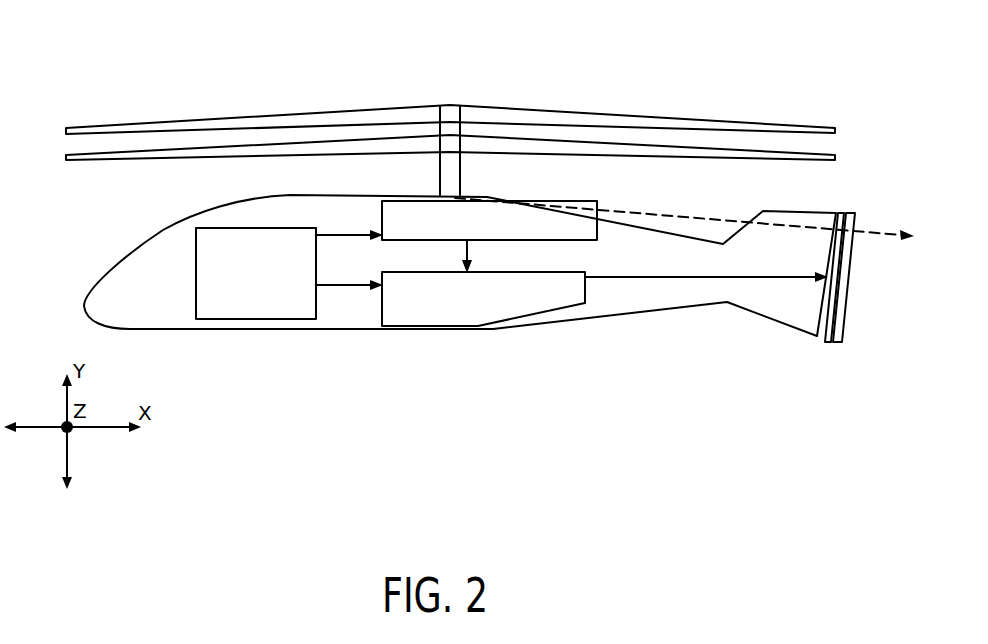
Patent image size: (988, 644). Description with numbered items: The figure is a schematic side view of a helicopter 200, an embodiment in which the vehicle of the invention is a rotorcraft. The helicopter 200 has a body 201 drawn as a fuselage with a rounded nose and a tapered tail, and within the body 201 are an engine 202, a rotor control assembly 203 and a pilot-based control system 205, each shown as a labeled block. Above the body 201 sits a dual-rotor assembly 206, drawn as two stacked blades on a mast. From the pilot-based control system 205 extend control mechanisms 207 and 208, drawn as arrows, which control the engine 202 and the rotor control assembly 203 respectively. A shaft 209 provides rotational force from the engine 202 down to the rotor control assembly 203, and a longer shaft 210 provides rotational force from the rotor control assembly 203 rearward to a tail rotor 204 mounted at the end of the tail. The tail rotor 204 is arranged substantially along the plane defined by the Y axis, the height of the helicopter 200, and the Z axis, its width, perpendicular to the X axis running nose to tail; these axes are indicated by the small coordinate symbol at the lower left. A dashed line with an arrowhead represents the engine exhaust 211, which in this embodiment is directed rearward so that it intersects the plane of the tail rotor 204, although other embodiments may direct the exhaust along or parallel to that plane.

The helicopter 200 is at (588, 415).
The body 201 is at (370, 319).
The engine 202 is at (493, 226).
The rotor control assembly 203 is at (515, 308).
The tail rotor 204 is at (830, 326).
The pilot-based control system 205 is at (263, 320).
The dual-rotor assembly 206 is at (524, 92).
The control mechanism 207 is at (348, 233).
The control mechanism 208 is at (323, 286).
The shaft 209 is at (469, 245).
The shaft 210 is at (662, 278).
The engine exhaust 211 is at (675, 217).